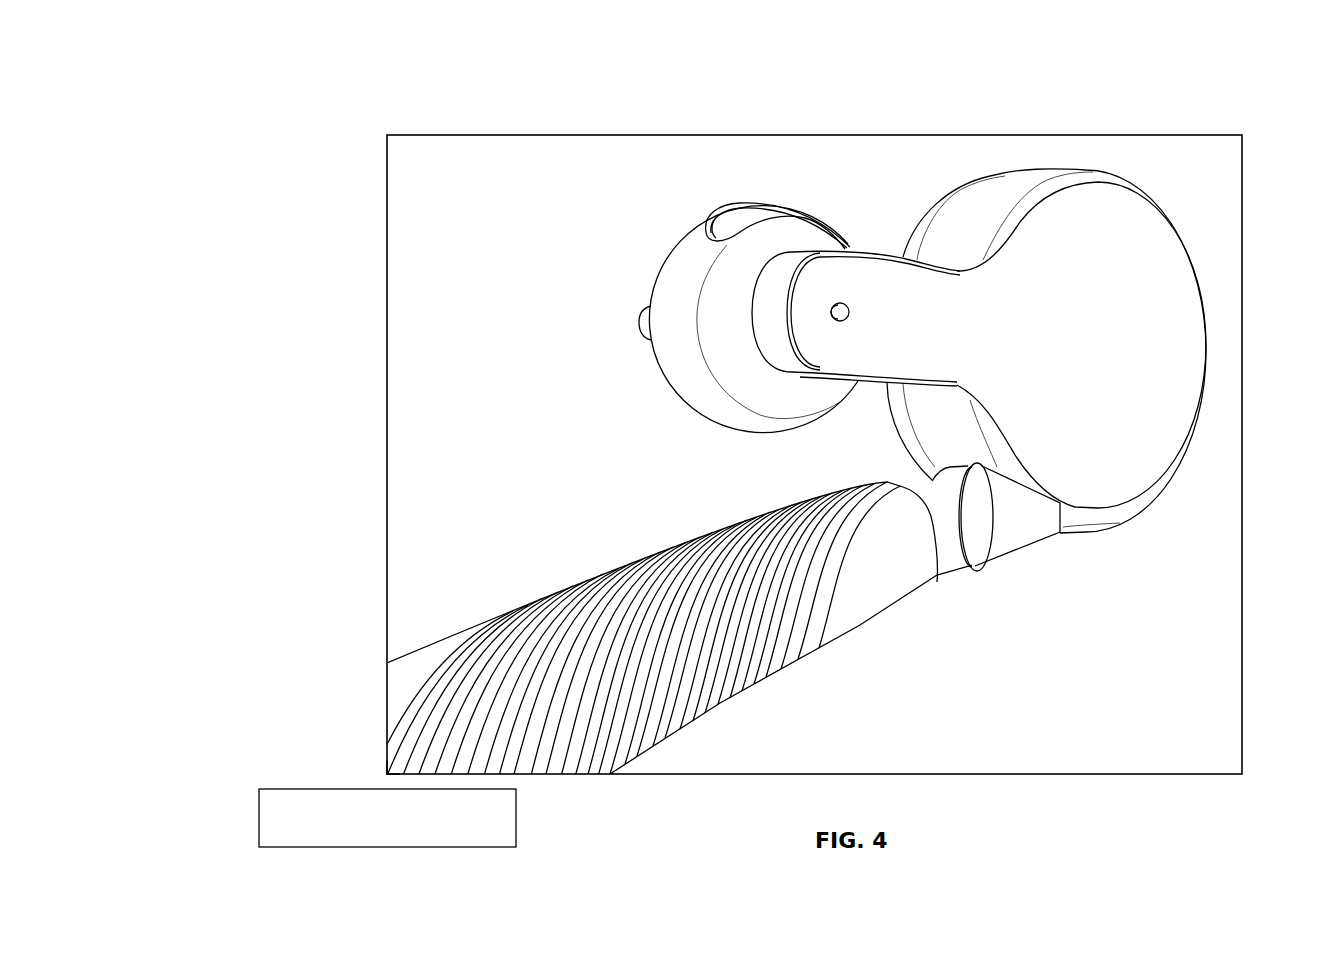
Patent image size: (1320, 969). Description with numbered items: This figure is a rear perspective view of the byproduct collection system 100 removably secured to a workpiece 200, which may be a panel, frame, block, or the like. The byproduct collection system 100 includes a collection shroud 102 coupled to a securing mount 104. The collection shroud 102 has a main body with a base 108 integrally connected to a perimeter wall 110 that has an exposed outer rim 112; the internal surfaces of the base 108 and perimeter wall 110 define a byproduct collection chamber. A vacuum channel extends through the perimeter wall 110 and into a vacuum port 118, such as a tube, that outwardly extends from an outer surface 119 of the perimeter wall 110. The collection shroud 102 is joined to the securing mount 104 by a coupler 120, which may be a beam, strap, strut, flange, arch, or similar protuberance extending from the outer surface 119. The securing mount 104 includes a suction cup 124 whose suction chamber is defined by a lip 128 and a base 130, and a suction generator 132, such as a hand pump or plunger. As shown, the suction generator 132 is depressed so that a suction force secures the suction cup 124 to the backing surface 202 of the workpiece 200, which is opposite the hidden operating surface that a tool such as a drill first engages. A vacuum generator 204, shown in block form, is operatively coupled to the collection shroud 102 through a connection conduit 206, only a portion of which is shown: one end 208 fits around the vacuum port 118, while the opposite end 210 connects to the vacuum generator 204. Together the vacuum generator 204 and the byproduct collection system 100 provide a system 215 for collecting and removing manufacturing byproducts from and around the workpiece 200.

The byproduct collection system 100 is at (1188, 228).
The collection shroud 102 is at (1147, 197).
The securing mount 104 is at (790, 206).
The base 108 is at (1140, 283).
The perimeter wall 110 is at (1000, 188).
The exposed outer rim 112 is at (945, 210).
The vacuum port 118 is at (958, 553).
The outer surface 119 is at (1155, 338).
The coupler 120 is at (910, 297).
The suction cup 124 is at (662, 243).
The lip 128 is at (683, 277).
The base 130 is at (812, 240).
The suction generator 132 is at (807, 204).
The workpiece 200 is at (578, 218).
The backing surface 202 is at (431, 451).
The vacuum generator 204 is at (516, 800).
The connection conduit 206 is at (757, 683).
The end of the connection conduit 208 is at (912, 598).
The opposite end of the connection conduit 210 is at (390, 772).
The system 215 is at (381, 700).